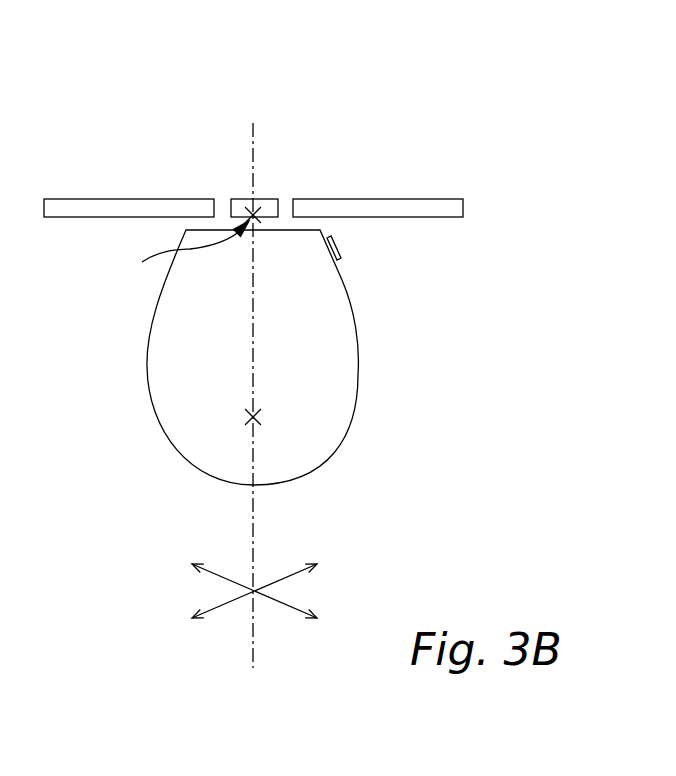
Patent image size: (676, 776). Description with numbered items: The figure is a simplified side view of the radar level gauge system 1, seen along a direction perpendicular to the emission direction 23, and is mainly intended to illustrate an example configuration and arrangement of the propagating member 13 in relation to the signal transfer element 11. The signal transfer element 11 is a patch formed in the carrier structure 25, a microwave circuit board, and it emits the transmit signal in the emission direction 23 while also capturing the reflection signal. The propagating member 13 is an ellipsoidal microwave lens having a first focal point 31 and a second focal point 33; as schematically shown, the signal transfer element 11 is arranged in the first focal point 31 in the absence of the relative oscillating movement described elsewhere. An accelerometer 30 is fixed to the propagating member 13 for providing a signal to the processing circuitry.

The radar level gauge system 1 is at (394, 113).
The signal transfer element 11 is at (253, 213).
The propagating member 13 is at (347, 347).
The emission direction 23 is at (253, 640).
The carrier structure 25 is at (428, 206).
The accelerometer 30 is at (340, 247).
The first focal point 31 is at (181, 256).
The second focal point 33 is at (250, 420).